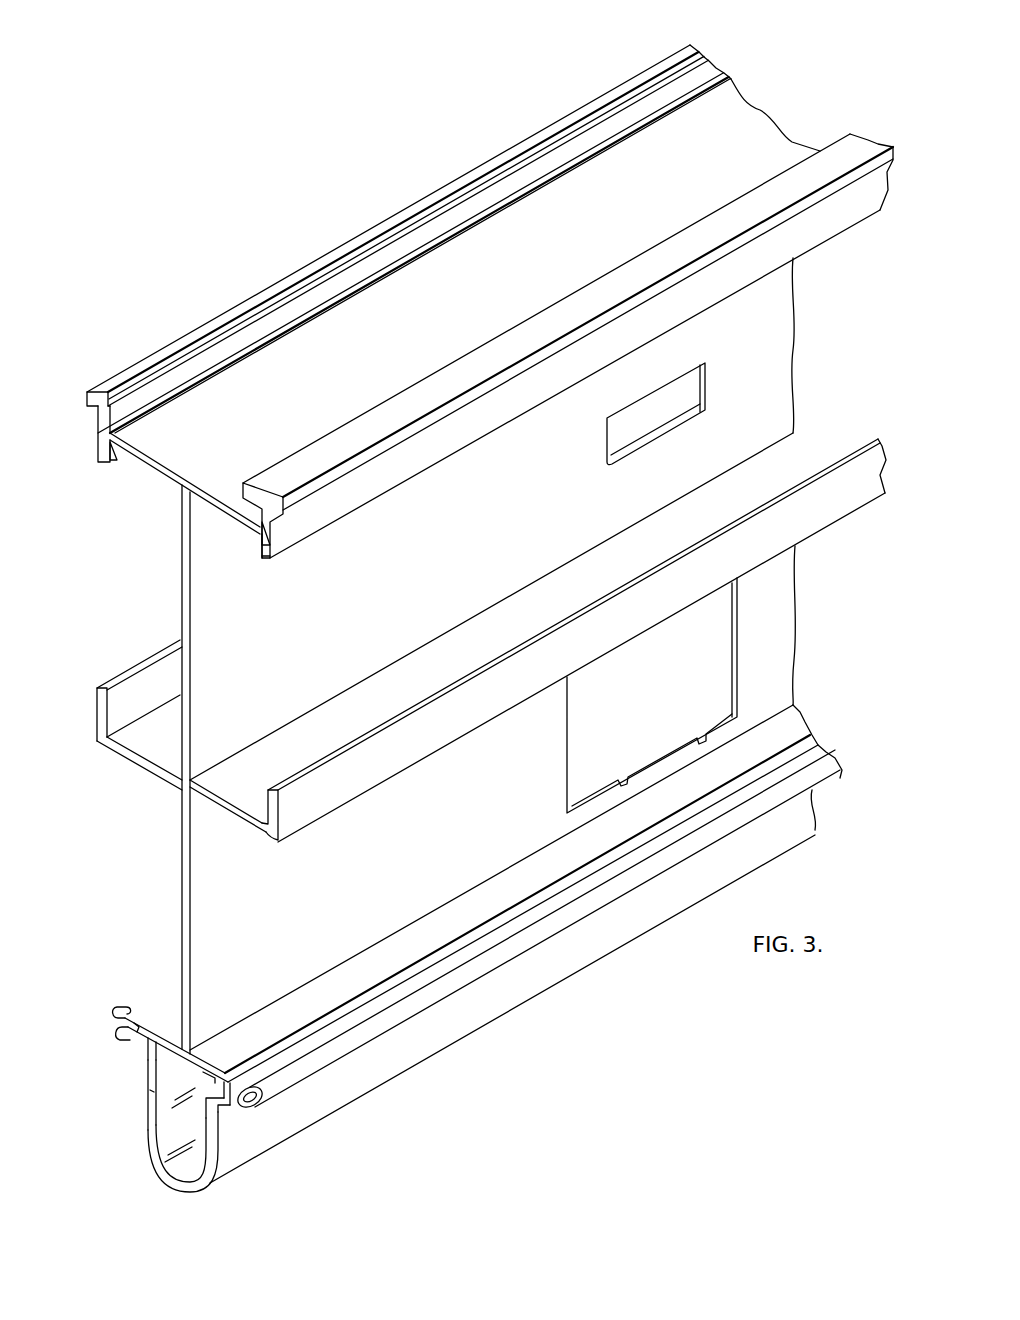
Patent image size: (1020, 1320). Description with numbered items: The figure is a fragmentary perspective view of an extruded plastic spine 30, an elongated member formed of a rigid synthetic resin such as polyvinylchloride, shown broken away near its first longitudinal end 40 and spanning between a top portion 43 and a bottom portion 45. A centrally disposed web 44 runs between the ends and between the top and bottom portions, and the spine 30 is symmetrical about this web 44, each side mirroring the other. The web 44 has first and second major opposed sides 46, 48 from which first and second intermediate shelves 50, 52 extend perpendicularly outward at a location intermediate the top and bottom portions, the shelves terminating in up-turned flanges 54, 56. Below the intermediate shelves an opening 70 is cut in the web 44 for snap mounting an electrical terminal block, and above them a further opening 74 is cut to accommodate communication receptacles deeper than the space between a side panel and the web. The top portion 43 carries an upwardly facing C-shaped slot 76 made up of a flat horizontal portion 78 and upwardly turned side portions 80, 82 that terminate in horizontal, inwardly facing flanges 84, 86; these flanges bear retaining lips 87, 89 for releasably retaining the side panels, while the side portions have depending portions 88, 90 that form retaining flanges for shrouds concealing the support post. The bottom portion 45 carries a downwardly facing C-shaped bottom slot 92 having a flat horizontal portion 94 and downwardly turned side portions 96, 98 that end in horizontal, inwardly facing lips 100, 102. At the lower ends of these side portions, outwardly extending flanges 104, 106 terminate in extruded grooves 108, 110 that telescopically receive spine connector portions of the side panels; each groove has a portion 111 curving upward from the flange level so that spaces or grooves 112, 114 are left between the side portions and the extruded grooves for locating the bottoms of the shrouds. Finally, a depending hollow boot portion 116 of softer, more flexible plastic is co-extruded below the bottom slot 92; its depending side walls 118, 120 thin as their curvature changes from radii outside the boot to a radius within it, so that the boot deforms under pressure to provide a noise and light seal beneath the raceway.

The extruded plastic spine 30 is at (872, 713).
The first longitudinal end 40 is at (186, 919).
The top portion 43 is at (734, 153).
The web 44 is at (180, 847).
The bottom portion 45 is at (640, 942).
The first major opposed side 46 is at (190, 702).
The second major opposed side 48 is at (190, 741).
The first intermediate shelf 50 is at (142, 766).
The second intermediate shelf 52 is at (230, 818).
The up-turned flange 54 is at (97, 704).
The up-turned flange 56 is at (345, 775).
The opening 70 is at (567, 745).
The opening 74 is at (607, 429).
The C-shaped slot 76 is at (243, 509).
The flat horizontal portion 78 is at (186, 456).
The upwardly turned side portion 80 is at (96, 412).
The upwardly turned side portion 82 is at (278, 531).
The inwardly facing flange 84 is at (366, 266).
The inwardly facing flange 86 is at (549, 322).
The retaining lip 87 is at (303, 278).
The depending portion 88 is at (96, 448).
The retaining lip 89 is at (348, 460).
The depending portion 90 is at (269, 561).
The bottom slot 92 is at (189, 1050).
The flat horizontal portion 94 is at (400, 942).
The downwardly turned side portion 96 is at (147, 1051).
The downwardly turned side portion 98 is at (340, 998).
The inwardly facing lip 100 is at (151, 1083).
The inwardly facing lip 102 is at (210, 1073).
The outwardly extending flange 104 is at (119, 1036).
The outwardly extending flange 106 is at (230, 1118).
The extruded groove 108 is at (118, 1014).
The extruded groove 110 is at (263, 1109).
The upwardly curving portion 111 is at (547, 996).
The groove 112 is at (138, 1024).
The groove 114 is at (306, 1045).
The hollow boot portion 116 is at (164, 1179).
The side wall 118 is at (158, 1103).
The side wall 120 is at (229, 1145).